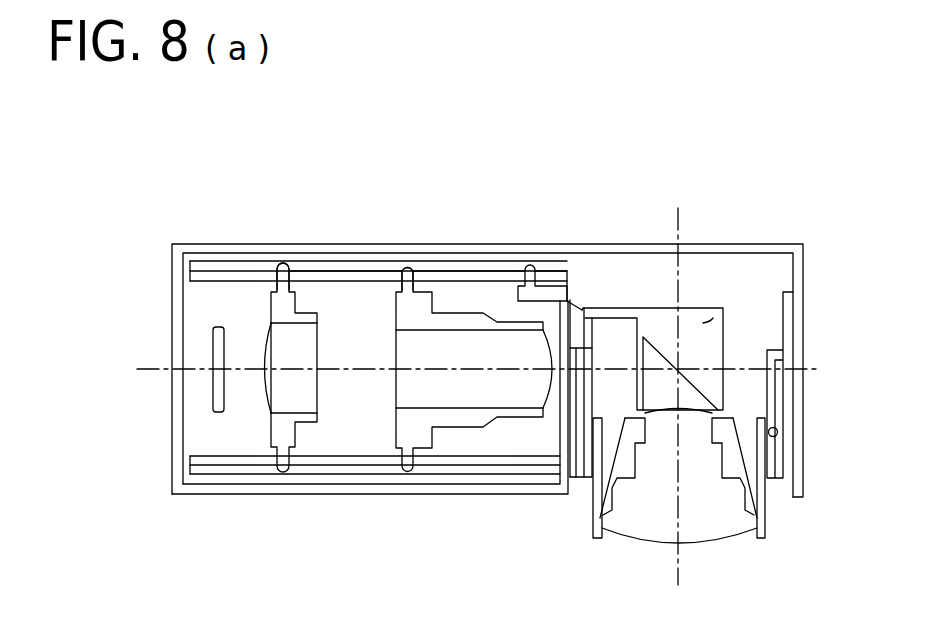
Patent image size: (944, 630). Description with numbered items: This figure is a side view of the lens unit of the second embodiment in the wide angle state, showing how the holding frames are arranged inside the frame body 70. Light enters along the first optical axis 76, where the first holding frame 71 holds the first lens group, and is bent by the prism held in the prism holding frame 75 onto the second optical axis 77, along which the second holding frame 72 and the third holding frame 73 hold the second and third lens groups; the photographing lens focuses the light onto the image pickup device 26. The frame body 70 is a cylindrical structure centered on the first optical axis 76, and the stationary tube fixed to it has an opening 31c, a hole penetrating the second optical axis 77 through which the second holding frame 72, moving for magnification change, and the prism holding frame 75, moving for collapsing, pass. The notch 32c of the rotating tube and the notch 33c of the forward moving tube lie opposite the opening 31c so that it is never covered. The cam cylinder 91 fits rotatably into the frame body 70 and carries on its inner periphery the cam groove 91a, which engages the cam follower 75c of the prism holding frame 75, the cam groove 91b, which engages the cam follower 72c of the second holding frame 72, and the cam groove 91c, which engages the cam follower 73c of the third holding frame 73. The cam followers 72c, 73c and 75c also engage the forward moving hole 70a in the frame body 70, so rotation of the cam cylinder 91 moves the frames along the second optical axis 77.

The frame body 70 is at (242, 248).
The forward moving hole 70a is at (212, 260).
The cam follower 73c is at (281, 262).
The cam groove 91c is at (292, 260).
The cam follower 72c is at (407, 262).
The cam groove 91b is at (417, 262).
The cam follower 75c is at (530, 266).
The cam groove 91a is at (560, 271).
The opening 31c is at (575, 307).
The notch 32c is at (586, 348).
The notch 33c is at (592, 360).
The prism holding frame 75 is at (722, 310).
The image pickup device 26 is at (213, 338).
The third holding frame 73 is at (277, 305).
The second holding frame 72 is at (394, 317).
The second optical axis 77 is at (348, 371).
The cam cylinder 91 is at (213, 474).
The first optical axis 76 is at (678, 503).
The first holding frame 71 is at (765, 526).